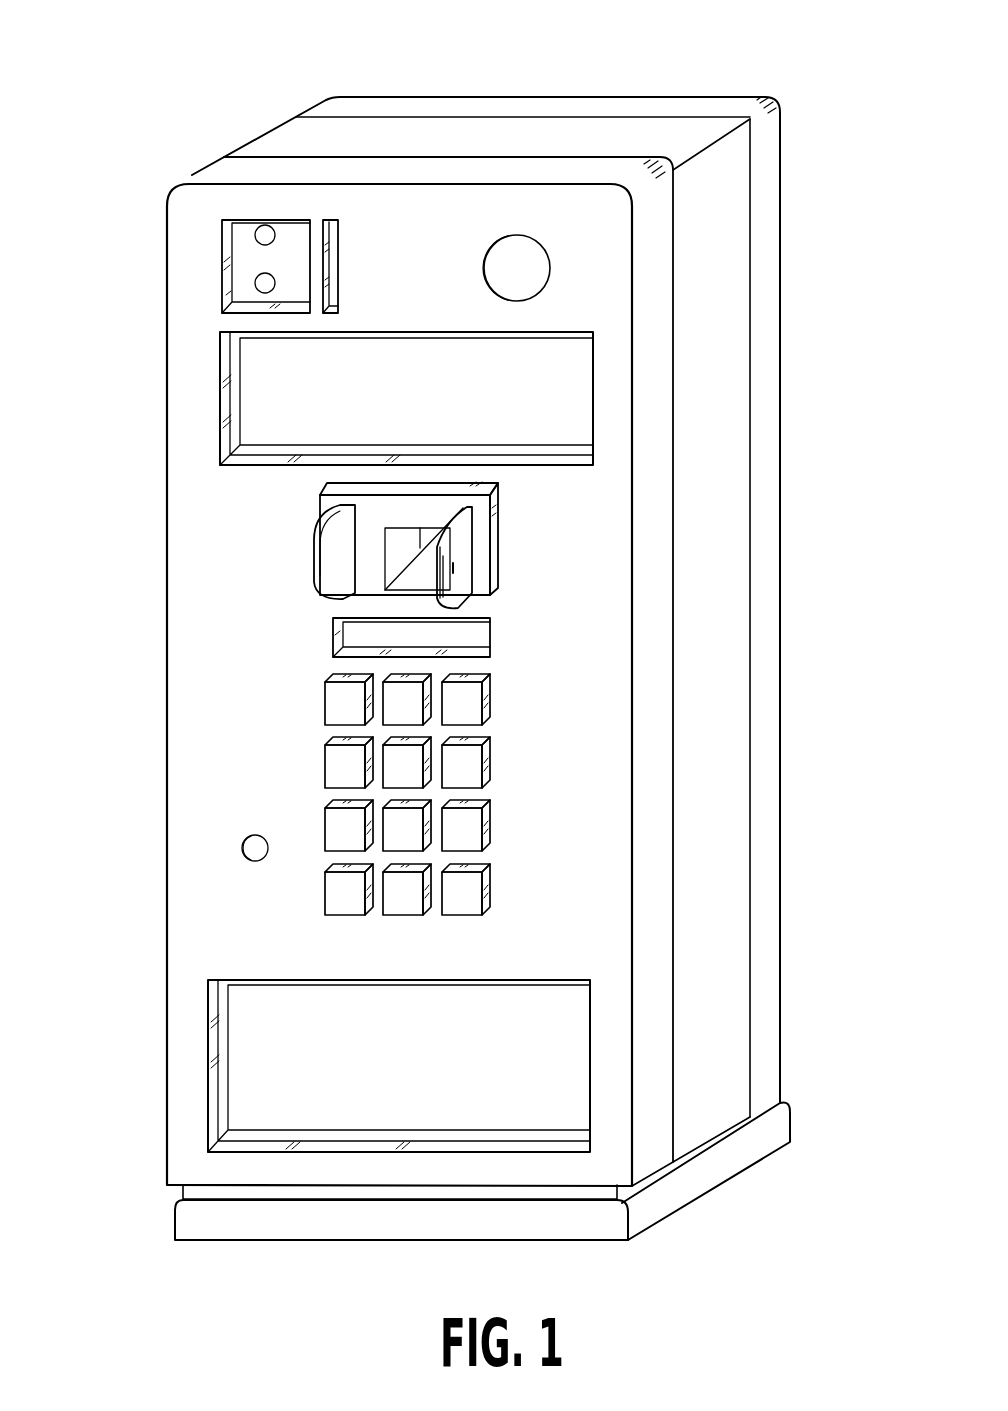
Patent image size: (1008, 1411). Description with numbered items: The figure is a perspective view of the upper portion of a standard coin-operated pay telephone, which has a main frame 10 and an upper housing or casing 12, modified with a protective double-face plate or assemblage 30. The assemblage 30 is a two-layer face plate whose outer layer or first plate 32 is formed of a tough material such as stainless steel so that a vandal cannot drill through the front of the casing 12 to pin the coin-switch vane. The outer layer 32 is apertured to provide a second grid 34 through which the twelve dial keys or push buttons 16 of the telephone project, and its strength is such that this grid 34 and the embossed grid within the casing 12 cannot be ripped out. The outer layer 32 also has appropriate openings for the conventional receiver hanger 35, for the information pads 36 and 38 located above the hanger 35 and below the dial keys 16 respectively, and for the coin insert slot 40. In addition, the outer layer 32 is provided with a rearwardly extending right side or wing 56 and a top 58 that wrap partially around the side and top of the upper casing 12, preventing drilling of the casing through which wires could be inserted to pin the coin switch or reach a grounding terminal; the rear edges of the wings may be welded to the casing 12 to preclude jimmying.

The main frame 10 is at (762, 877).
The upper housing or casing 12 is at (712, 422).
The dial keys or push buttons 16 is at (470, 823).
The two-layer face plate or assemblage 30 is at (186, 167).
The outer layer or first plate 32 is at (205, 608).
The second grid 34 is at (340, 730).
The receiver hanger 35 is at (455, 570).
The information pad 36 is at (410, 416).
The information pad 38 is at (393, 1083).
The coin insert slot 40 is at (337, 227).
The right side or wing 56 is at (650, 573).
The top 58 is at (460, 168).